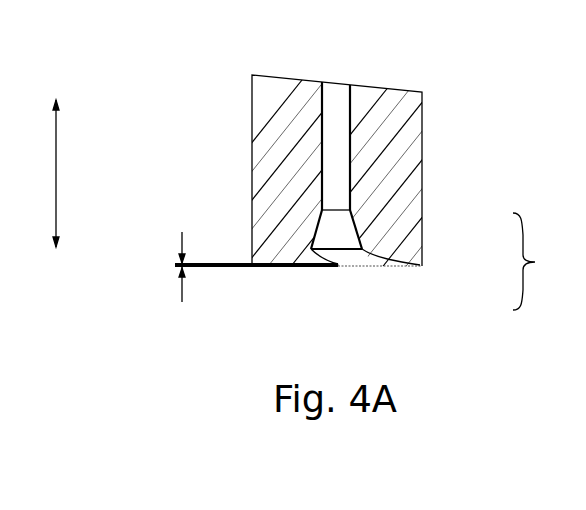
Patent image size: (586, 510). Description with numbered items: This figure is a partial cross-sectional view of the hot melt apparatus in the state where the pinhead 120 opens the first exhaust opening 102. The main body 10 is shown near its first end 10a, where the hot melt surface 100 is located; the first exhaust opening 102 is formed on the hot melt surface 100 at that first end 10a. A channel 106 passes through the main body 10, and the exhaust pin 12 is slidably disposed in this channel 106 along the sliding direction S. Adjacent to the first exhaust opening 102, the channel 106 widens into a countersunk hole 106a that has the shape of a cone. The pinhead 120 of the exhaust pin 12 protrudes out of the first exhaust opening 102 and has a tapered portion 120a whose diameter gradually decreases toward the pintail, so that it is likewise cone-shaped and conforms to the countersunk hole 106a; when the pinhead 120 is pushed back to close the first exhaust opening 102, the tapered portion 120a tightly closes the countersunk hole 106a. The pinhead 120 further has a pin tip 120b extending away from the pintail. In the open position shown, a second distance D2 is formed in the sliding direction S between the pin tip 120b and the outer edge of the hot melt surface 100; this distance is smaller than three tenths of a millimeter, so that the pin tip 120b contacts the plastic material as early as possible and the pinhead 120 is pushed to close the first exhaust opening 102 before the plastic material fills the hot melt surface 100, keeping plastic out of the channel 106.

The main body 10 is at (286, 125).
The first end 10a is at (284, 275).
The exhaust pin 12 is at (337, 157).
The hot melt surface 100 is at (280, 251).
The first exhaust opening 102 is at (300, 232).
The channel 106 is at (360, 115).
The countersunk hole 106a is at (310, 208).
The pinhead 120 is at (549, 261).
The tapered portion 120a is at (352, 226).
The pin tip 120b is at (338, 264).
The second distance D2 is at (161, 267).
The sliding direction S is at (54, 175).